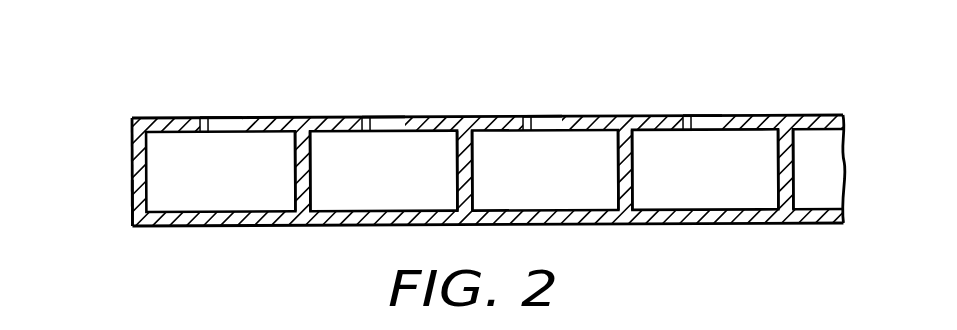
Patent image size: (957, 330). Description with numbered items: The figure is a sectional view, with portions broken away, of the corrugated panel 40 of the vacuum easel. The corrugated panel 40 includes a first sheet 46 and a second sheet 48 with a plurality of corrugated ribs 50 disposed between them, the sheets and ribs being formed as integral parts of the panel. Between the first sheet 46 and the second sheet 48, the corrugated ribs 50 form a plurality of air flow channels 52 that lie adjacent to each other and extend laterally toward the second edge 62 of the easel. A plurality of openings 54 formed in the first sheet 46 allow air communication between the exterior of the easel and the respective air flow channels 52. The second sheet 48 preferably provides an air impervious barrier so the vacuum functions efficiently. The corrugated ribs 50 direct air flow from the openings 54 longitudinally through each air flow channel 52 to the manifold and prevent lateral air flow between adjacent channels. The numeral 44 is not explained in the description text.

The corrugated panel 40 is at (477, 144).
The end wall 44 is at (132, 150).
The first sheet 46 is at (484, 118).
The second sheet 48 is at (675, 227).
The corrugated ribs 50 is at (303, 177).
The air flow channels 52 is at (236, 185).
The openings 54 is at (238, 117).
The second edge 62 is at (132, 195).